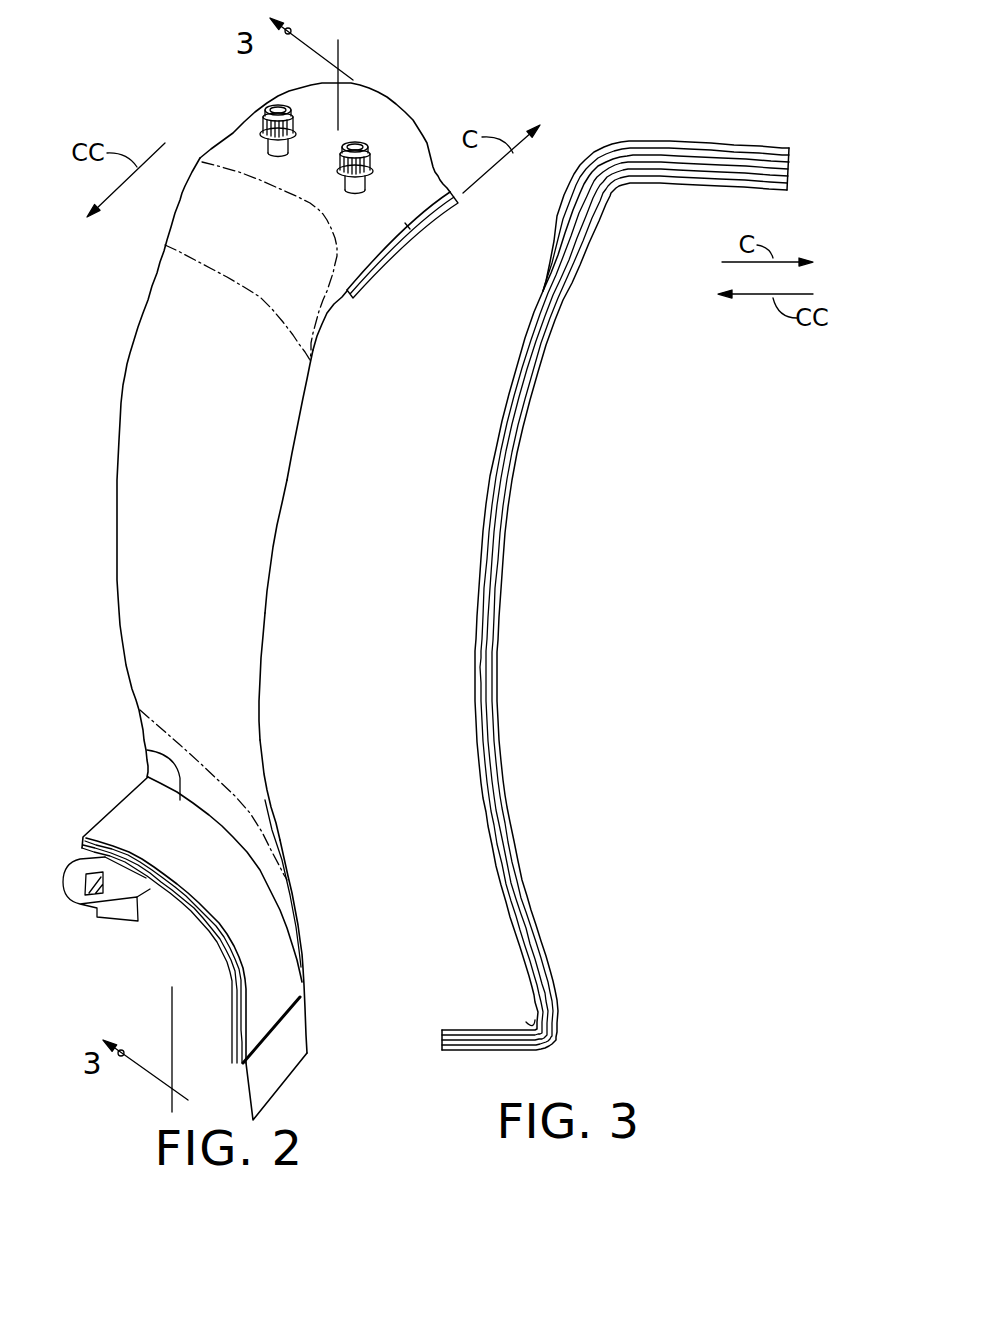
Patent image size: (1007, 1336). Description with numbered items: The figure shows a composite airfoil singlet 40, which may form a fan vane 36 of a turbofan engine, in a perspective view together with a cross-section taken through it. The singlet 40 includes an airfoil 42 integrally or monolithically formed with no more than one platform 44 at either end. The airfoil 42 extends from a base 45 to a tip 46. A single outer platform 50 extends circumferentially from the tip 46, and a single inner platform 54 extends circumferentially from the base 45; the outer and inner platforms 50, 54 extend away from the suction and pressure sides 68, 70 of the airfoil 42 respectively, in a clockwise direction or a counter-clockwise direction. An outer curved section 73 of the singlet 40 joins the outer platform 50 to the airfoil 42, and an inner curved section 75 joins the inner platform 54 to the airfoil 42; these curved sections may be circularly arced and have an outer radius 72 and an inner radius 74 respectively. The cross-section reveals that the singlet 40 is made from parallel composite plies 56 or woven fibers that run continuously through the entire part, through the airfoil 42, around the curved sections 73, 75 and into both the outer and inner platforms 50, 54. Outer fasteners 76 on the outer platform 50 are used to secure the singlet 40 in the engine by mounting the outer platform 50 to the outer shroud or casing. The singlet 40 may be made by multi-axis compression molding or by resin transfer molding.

In FIG. 2, the fan vane 36 is at (125, 946).
In FIG. 3, the fan vane 36 is at (563, 1054).
In FIG. 2, the composite airfoil singlet 40 is at (233, 150).
In FIG. 3, the composite airfoil singlet 40 is at (489, 1058).
In FIG. 2, the airfoil 42 is at (261, 605).
In FIG. 3, the airfoil 42 is at (518, 437).
In FIG. 2, the platform 44 is at (400, 143).
In FIG. 3, the platform 44 is at (740, 142).
In FIG. 2, the base 45 is at (148, 755).
In FIG. 3, the base 45 is at (557, 992).
In FIG. 2, the tip 46 is at (313, 366).
In FIG. 2, the outer platform 50 is at (360, 230).
In FIG. 3, the outer platform 50 is at (675, 138).
In FIG. 2, the inner platform 54 is at (262, 963).
In FIG. 3, the parallel composite plies 56 is at (487, 637).
In FIG. 2, the suction side 68 is at (282, 495).
In FIG. 3, the suction side 68 is at (508, 532).
In FIG. 2, the pressure side 70 is at (236, 637).
In FIG. 3, the pressure side 70 is at (492, 472).
In FIG. 3, the outer radius 72 is at (626, 203).
In FIG. 2, the outer curved section 73 is at (328, 318).
In FIG. 3, the outer curved section 73 is at (622, 185).
In FIG. 3, the inner radius 74 is at (519, 998).
In FIG. 3, the inner curved section 75 is at (528, 1023).
In FIG. 2, the outer fasteners 76 is at (355, 143).